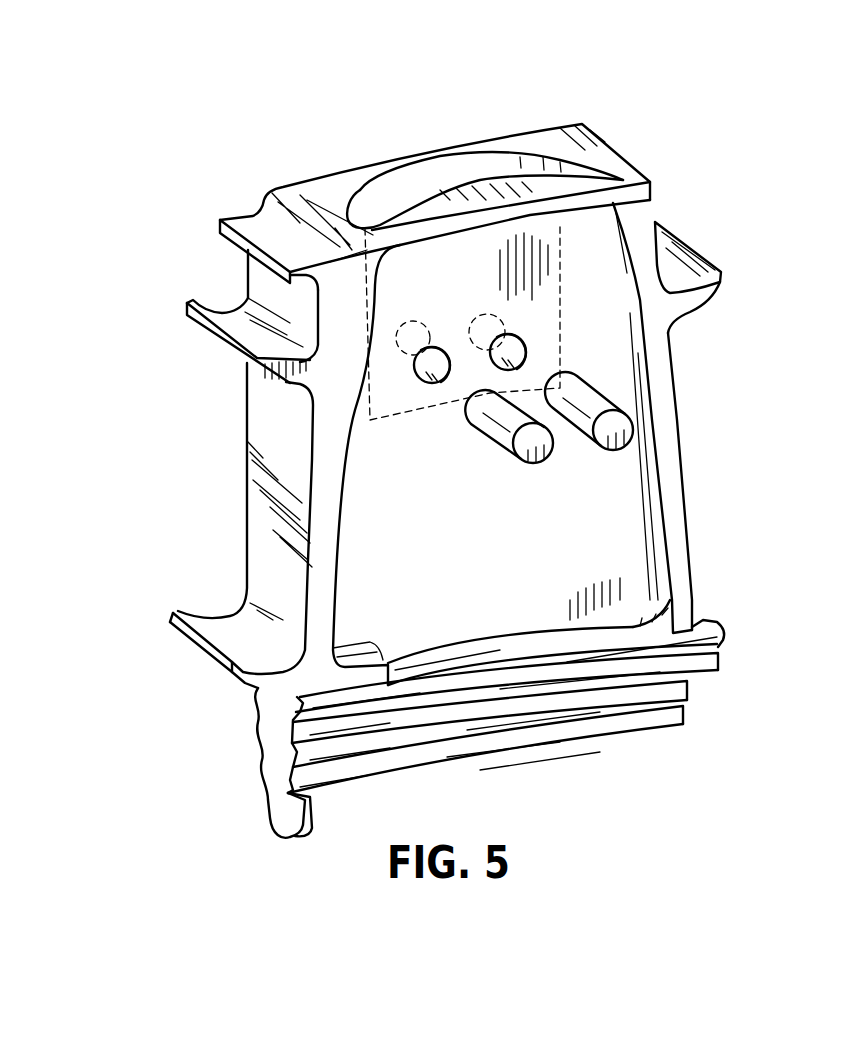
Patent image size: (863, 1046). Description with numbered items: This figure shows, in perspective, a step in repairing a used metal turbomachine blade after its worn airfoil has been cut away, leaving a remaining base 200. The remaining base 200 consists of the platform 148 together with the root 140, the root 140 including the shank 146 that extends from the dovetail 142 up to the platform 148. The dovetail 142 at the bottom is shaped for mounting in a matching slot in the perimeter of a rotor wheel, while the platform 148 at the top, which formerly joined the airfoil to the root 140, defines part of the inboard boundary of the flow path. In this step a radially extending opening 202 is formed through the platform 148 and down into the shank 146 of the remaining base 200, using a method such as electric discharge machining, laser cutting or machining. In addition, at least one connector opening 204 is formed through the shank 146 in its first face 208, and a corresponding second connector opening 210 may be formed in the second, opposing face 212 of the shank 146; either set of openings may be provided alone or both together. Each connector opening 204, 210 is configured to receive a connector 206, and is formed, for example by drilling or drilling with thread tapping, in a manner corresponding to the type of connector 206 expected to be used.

The root 140 is at (710, 575).
The dovetail 142 is at (578, 728).
The shank 146 is at (595, 270).
The platform 148 is at (620, 163).
The remaining base 200 is at (202, 572).
The radially extending opening 202 is at (370, 203).
The connector opening 204 is at (427, 367).
The connector 206 is at (533, 453).
The first face 208 is at (613, 528).
The second connector opening 210 is at (397, 327).
The second face 212 is at (277, 420).